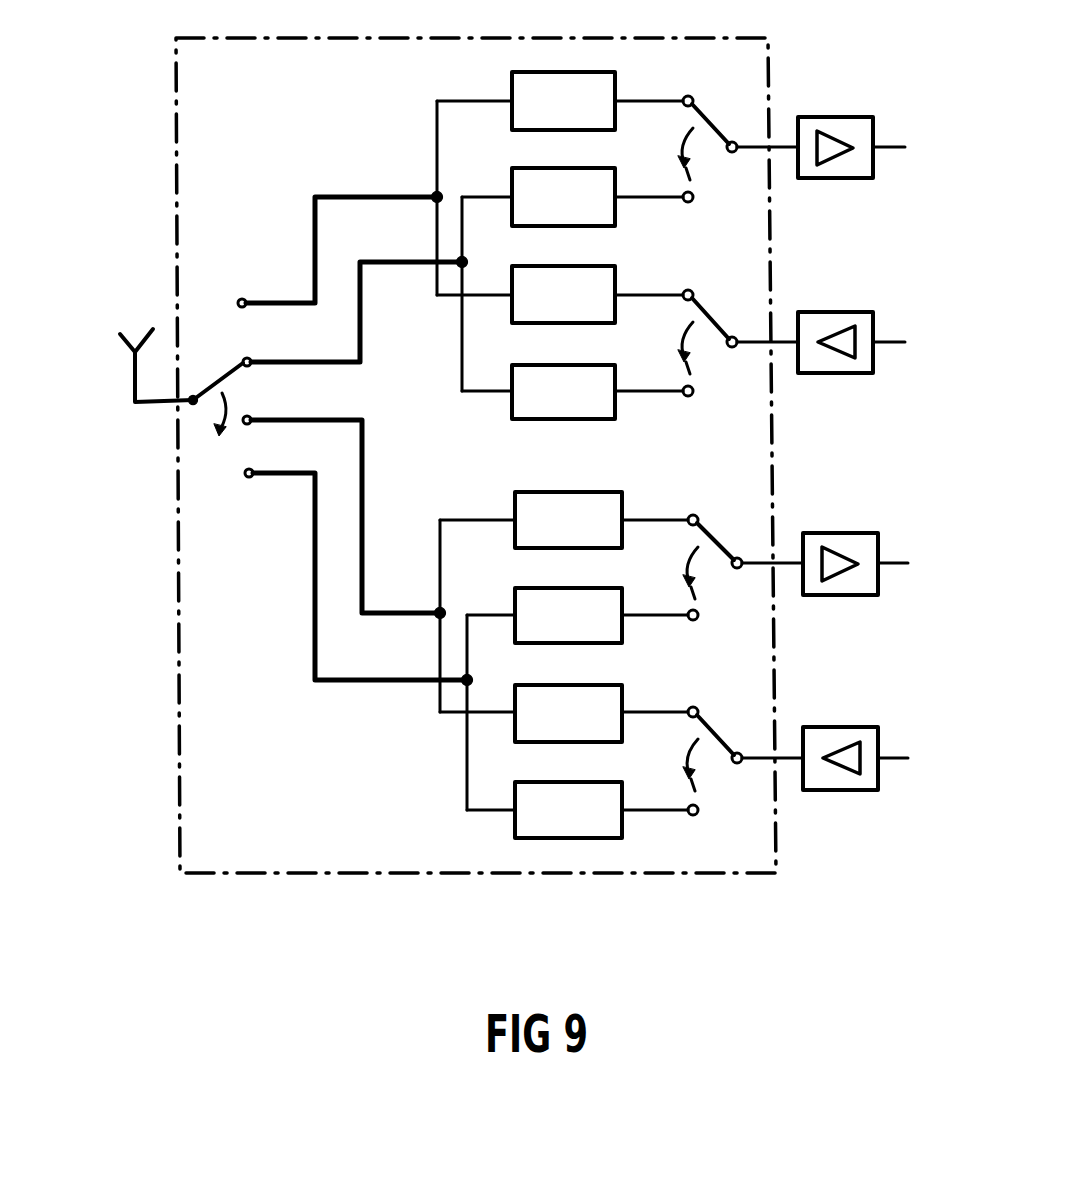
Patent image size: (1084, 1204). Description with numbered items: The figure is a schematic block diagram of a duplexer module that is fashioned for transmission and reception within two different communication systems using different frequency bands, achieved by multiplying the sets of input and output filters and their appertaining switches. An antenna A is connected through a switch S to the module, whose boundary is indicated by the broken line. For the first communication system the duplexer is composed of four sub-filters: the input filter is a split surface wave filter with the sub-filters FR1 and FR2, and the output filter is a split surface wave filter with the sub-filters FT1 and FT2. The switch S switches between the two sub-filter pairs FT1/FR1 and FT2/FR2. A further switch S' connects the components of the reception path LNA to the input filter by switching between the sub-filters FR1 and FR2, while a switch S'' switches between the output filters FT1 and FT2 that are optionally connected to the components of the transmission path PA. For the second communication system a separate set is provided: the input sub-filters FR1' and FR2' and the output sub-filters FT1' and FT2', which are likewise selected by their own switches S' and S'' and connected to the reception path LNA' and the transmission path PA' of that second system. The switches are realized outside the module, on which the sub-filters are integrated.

The antenna A is at (127, 345).
The switch S is at (221, 385).
The switch S' is at (740, 334).
The switch S'' is at (740, 527).
The sub-filter FR1 is at (560, 101).
The sub-filter FR2 is at (572, 197).
The sub-filter FT1 is at (560, 294).
The sub-filter FT2 is at (572, 392).
The sub-filter FR1' is at (564, 520).
The sub-filter FR2' is at (577, 615).
The sub-filter FT1' is at (564, 713).
The sub-filter FT2' is at (577, 810).
The reception path LNA is at (851, 103).
The transmission path PA is at (851, 300).
The reception path LNA' is at (855, 521).
The transmission path PA' is at (855, 714).